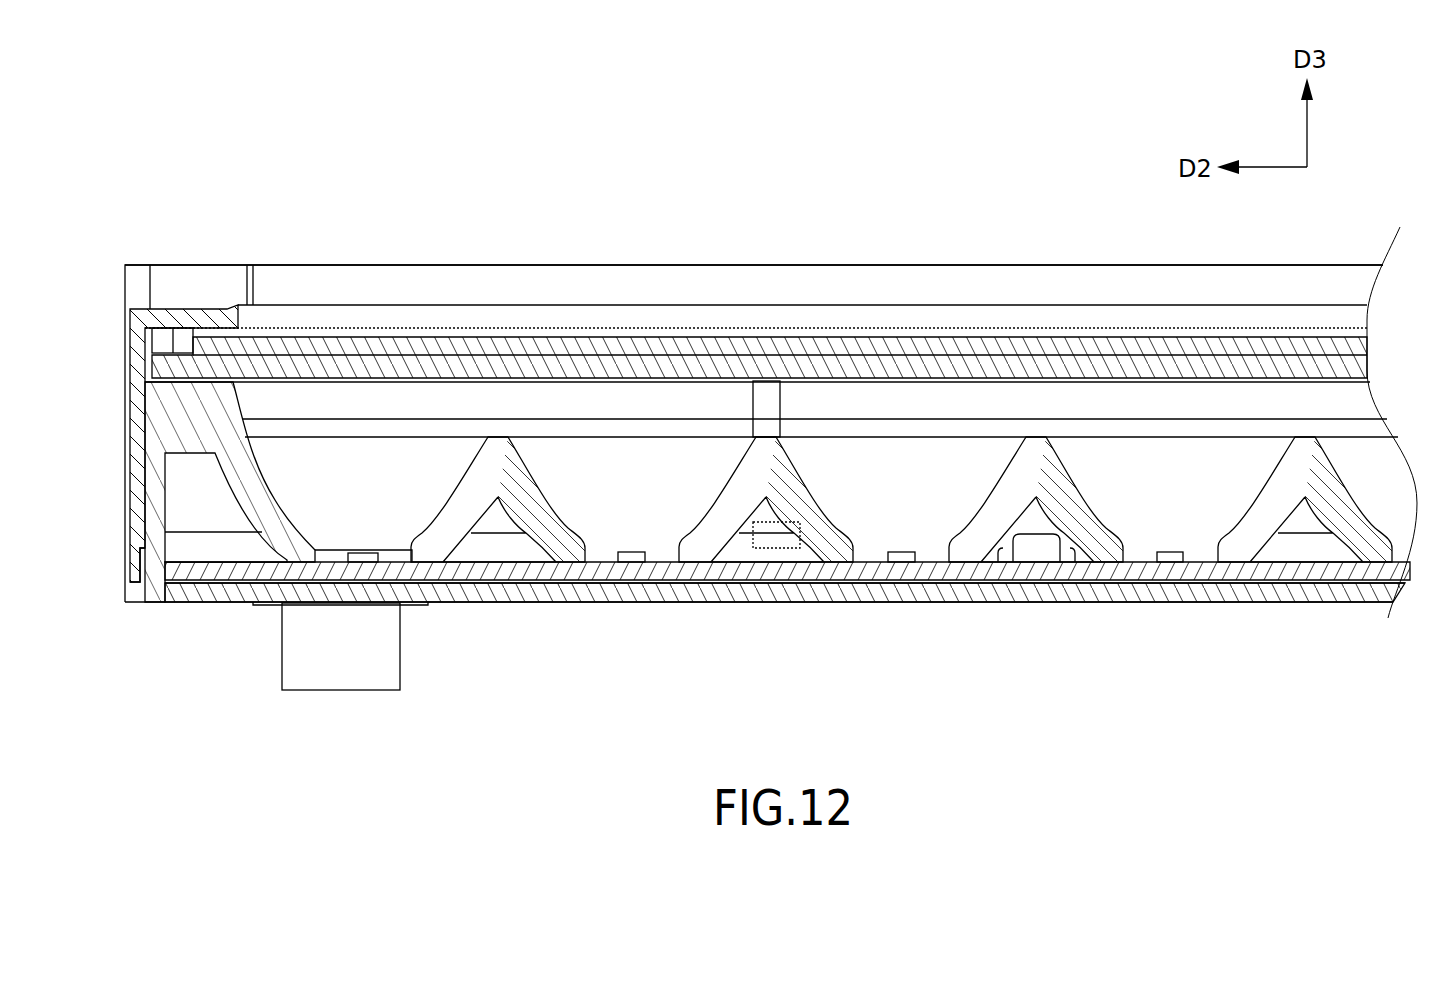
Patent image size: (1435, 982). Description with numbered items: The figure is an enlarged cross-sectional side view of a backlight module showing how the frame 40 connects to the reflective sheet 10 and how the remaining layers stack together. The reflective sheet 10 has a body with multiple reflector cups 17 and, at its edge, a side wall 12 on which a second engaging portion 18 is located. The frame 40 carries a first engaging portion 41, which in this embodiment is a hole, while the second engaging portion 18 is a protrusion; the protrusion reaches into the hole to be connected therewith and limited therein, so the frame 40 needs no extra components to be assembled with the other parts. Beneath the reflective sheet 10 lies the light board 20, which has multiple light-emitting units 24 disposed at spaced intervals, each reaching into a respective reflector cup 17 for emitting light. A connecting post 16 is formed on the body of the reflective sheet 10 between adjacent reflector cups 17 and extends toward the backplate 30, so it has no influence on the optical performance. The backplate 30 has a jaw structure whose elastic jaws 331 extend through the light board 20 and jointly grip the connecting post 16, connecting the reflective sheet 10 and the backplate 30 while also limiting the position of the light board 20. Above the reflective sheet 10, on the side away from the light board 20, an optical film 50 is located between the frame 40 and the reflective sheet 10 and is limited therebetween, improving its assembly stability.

The reflective sheet 10 is at (488, 386).
The side wall 12 is at (158, 590).
The connecting post 16 is at (1037, 518).
The reflector cup 17 is at (452, 530).
The second engaging portion 18 is at (147, 532).
The light board 20 is at (650, 583).
The light-emitting unit 24 is at (630, 552).
The backplate 30 is at (815, 618).
The jaw 331 is at (1035, 550).
The frame 40 is at (774, 262).
The first engaging portion 41 is at (137, 492).
The optical film 50 is at (1008, 324).